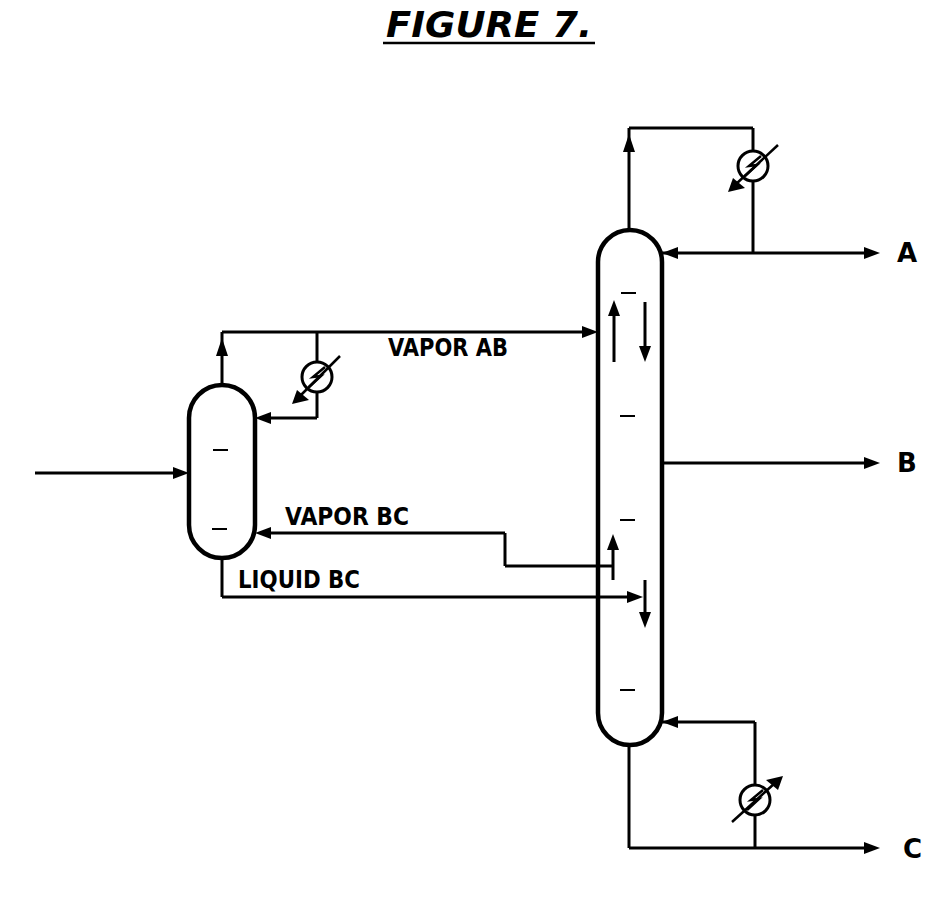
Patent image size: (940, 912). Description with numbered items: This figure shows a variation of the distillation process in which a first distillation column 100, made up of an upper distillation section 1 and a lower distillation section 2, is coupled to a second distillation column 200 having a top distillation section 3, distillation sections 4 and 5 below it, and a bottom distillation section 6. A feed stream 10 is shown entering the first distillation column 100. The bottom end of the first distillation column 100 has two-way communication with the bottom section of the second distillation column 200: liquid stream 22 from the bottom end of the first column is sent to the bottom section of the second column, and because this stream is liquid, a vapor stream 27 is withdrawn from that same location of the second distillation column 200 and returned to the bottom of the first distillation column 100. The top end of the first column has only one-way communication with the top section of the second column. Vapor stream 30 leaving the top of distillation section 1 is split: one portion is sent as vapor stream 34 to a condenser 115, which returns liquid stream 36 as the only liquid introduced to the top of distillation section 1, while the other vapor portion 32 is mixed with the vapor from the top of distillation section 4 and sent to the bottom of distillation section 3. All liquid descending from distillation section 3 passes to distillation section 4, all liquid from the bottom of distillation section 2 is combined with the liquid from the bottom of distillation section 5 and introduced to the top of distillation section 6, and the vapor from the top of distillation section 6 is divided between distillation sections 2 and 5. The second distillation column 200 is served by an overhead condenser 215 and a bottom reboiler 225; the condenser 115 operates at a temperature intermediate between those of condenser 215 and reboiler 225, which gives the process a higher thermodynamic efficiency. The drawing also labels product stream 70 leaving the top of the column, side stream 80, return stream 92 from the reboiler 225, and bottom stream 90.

The feed stream ABC 10 is at (96, 476).
The first distillation column 100 is at (274, 493).
The distillation section 1 is at (222, 440).
The distillation section 2 is at (222, 520).
The vapor stream 30 is at (221, 356).
The vapor portion 32 is at (450, 331).
The vapor stream 34 is at (316, 345).
The condenser 115 is at (333, 388).
The stream 36 is at (277, 420).
The vapor stream 27 is at (452, 532).
The liquid stream 22 is at (456, 598).
The second distillation column 200 is at (662, 605).
The top distillation section 3 is at (630, 280).
The distillation section 4 is at (630, 410).
The distillation section 5 is at (630, 515).
The bottom distillation section 6 is at (630, 680).
The condenser 215 is at (780, 152).
The product A overhead line 70 is at (800, 253).
The product B side draw line 80 is at (760, 463).
The reboiler return line 92 is at (712, 722).
The reboiler 225 is at (778, 802).
The product C bottoms line 90 is at (806, 849).